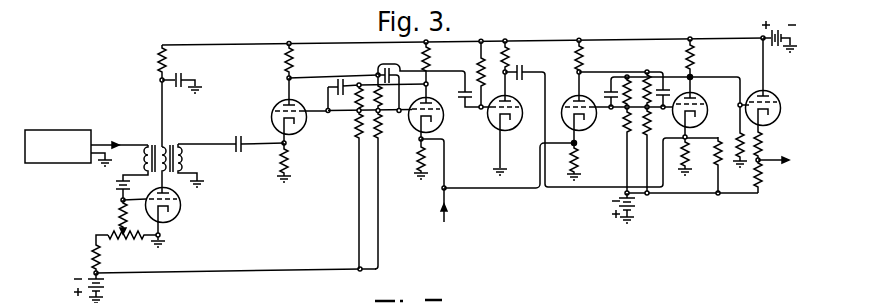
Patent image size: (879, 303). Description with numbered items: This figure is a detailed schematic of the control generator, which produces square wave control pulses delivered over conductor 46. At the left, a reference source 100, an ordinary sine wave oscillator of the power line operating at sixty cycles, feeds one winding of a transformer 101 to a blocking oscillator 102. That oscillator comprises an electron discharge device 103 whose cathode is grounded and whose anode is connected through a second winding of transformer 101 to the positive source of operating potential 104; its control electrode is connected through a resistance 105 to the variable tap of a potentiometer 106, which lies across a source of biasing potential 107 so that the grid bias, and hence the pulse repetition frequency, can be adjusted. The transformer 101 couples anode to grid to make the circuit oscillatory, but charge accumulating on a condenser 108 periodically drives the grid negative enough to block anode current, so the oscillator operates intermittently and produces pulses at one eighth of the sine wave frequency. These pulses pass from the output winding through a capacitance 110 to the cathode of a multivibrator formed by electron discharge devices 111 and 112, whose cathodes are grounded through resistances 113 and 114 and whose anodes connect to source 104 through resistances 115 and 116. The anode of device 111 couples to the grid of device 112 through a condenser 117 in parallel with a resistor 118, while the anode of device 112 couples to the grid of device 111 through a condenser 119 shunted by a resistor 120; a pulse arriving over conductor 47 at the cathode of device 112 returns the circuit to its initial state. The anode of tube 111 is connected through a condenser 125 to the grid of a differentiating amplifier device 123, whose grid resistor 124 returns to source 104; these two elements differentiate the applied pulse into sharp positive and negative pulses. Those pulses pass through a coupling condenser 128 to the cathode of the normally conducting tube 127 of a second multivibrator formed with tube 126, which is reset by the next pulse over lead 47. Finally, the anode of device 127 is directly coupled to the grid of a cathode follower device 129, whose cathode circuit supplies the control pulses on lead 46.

The reference source 100 is at (57, 130).
The transformer 101 is at (150, 141).
The blocking oscillator 102 is at (212, 206).
The electron discharge device 103 is at (180, 210).
The source of operating potential 104 is at (777, 28).
The resistance 105 is at (113, 212).
The potentiometer 106 is at (133, 249).
The source of biasing potential 107 is at (104, 291).
The condenser 108 is at (115, 185).
The capacitance 110 is at (231, 132).
The electron discharge device 111 is at (278, 106).
The electron discharge device 112 is at (443, 121).
The resistance 113 is at (280, 166).
The resistance 114 is at (412, 153).
The resistance 115 is at (285, 63).
The resistance 116 is at (429, 61).
The condenser 117 is at (386, 80).
The resistor 118 is at (384, 119).
The condenser 119 is at (344, 78).
The resistor 120 is at (351, 89).
The electron discharge device 123 is at (508, 129).
The grid resistor 124 is at (484, 56).
The condenser 125 is at (455, 98).
The electron discharge device 126 is at (582, 128).
The electron discharge device 127 is at (702, 129).
The coupling condenser 128 is at (526, 65).
The electron discharge device 129 is at (777, 95).
The conductor 46 is at (782, 164).
The conductor 47 is at (447, 216).